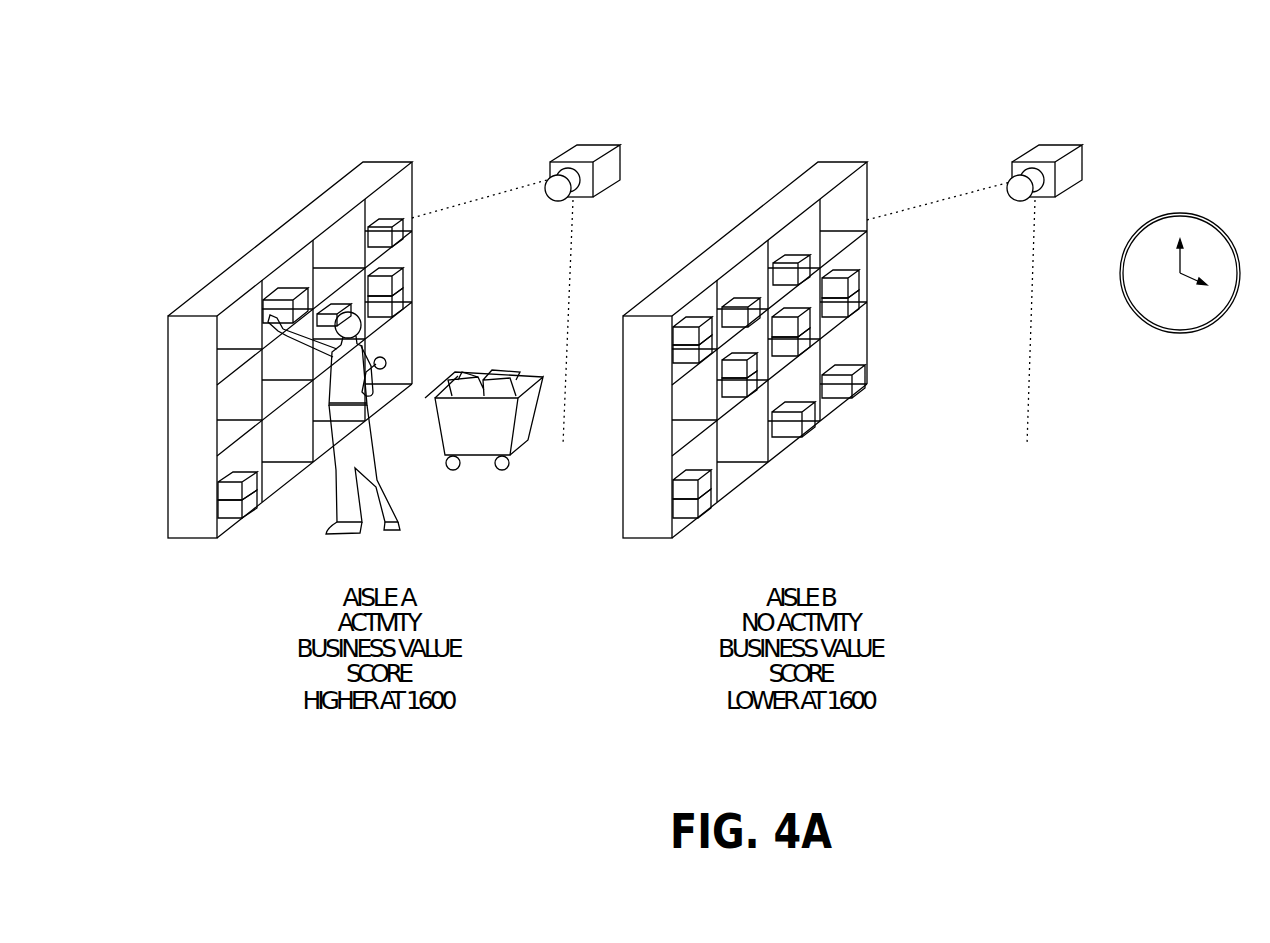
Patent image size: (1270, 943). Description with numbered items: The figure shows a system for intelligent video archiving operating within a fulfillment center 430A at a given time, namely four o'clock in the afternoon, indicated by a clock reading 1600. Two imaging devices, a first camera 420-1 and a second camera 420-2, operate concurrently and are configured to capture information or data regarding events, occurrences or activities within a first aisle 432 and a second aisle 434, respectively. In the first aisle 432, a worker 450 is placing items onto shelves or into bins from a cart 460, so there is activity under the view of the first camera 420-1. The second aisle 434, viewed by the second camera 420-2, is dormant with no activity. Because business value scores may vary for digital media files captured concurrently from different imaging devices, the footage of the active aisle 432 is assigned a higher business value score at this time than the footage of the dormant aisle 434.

The fulfillment center 430A is at (357, 128).
The aisle 432 is at (478, 156).
The camera 420-1 is at (595, 142).
The worker 450 is at (362, 344).
The cart 460 is at (450, 443).
The aisle 434 is at (922, 151).
The camera 420-2 is at (1052, 148).
The clock showing time 1600 is at (1180, 398).